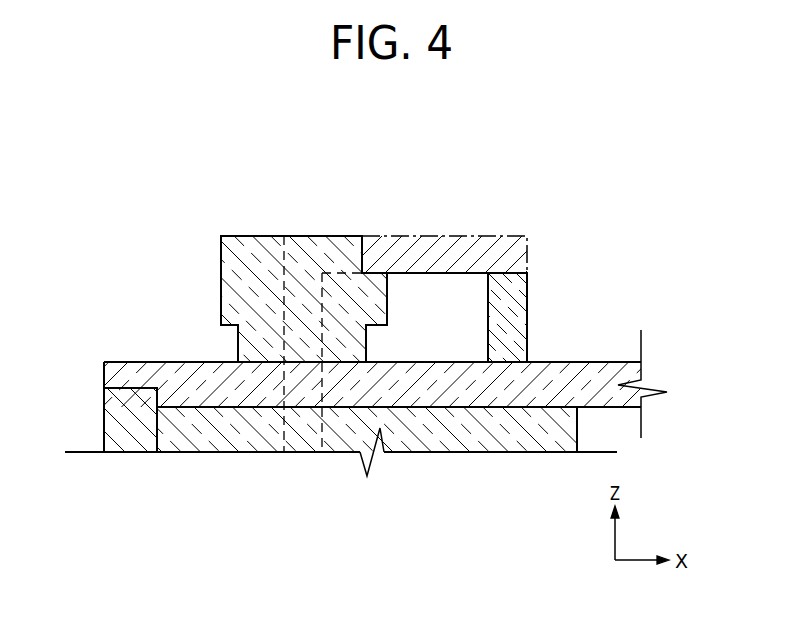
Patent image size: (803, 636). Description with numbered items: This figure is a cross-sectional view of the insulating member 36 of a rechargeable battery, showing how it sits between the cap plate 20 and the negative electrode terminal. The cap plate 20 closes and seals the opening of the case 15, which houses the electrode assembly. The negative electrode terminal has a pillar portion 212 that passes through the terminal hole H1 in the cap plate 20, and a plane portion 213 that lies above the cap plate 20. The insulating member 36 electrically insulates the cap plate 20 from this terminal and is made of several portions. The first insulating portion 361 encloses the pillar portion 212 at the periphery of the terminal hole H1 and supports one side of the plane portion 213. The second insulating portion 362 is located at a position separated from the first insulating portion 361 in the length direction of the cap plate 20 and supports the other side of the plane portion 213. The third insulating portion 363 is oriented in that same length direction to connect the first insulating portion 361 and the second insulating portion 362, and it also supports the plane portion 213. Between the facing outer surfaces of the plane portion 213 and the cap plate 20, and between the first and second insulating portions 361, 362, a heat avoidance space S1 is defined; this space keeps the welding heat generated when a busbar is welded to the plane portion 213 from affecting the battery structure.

The case 15 is at (125, 419).
The cap plate 20 is at (533, 388).
The insulating member 36 is at (216, 269).
The first insulating portion 361 is at (250, 300).
The second insulating portion 362 is at (510, 297).
The third insulating portion 363 is at (461, 300).
The pillar portion 212 is at (328, 378).
The plane portion 213 is at (415, 236).
The terminal hole H1 is at (285, 383).
The heat avoidance space S1 is at (462, 328).